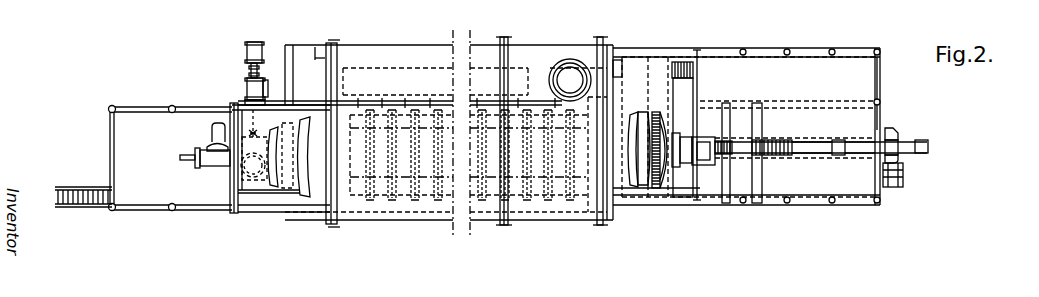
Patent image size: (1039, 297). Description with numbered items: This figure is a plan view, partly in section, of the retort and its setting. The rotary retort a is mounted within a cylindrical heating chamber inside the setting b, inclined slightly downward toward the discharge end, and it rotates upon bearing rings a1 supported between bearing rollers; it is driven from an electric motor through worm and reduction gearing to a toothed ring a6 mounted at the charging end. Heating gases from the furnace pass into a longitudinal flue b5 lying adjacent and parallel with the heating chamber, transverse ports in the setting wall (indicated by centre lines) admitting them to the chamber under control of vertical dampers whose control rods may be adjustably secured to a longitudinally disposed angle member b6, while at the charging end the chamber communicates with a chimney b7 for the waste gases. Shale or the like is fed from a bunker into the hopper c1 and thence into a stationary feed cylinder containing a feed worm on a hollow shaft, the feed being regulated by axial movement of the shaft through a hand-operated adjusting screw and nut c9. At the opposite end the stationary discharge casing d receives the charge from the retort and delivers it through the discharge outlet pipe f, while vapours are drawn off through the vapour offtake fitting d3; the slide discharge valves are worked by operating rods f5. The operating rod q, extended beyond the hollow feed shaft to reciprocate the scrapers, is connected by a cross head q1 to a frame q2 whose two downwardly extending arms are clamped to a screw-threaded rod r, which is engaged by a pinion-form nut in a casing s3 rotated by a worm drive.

The rotary retort a is at (312, 150).
The bearing rings a1 is at (302, 128).
The toothed ring a6 is at (657, 112).
The setting b is at (562, 207).
The longitudinal flue b5 is at (385, 77).
The longitudinally disposed angle member b6 is at (438, 103).
The chimney b7 is at (562, 59).
The hopper c1 is at (709, 137).
The adjusting screw and nut c9 is at (765, 140).
The stationary discharge casing d is at (262, 128).
The vapour offtake fitting d3 is at (212, 151).
The discharge outlet pipe f is at (252, 178).
The operating rods f5 is at (247, 105).
The operating rod q is at (806, 154).
The cross head q1 is at (838, 141).
The frame q2 is at (855, 154).
The screw-threaded rod r is at (910, 143).
The casing s3 is at (895, 131).